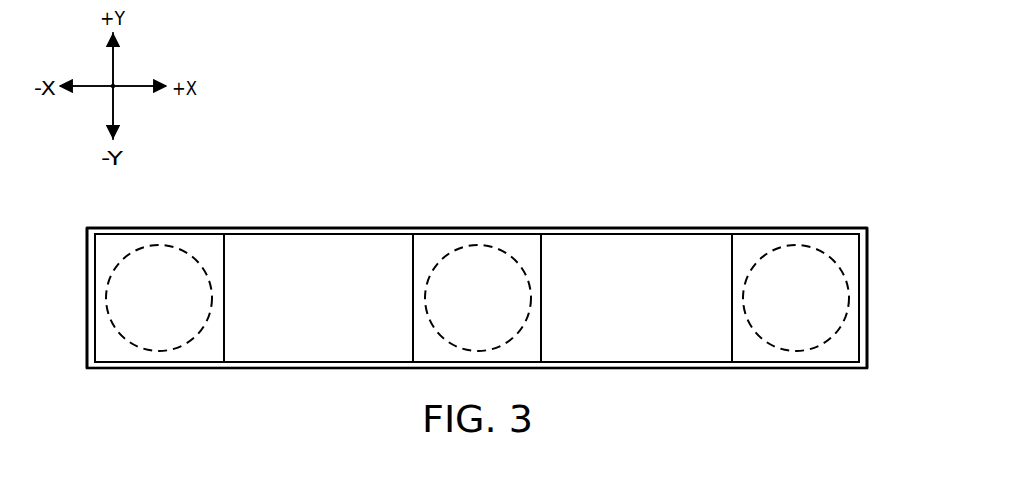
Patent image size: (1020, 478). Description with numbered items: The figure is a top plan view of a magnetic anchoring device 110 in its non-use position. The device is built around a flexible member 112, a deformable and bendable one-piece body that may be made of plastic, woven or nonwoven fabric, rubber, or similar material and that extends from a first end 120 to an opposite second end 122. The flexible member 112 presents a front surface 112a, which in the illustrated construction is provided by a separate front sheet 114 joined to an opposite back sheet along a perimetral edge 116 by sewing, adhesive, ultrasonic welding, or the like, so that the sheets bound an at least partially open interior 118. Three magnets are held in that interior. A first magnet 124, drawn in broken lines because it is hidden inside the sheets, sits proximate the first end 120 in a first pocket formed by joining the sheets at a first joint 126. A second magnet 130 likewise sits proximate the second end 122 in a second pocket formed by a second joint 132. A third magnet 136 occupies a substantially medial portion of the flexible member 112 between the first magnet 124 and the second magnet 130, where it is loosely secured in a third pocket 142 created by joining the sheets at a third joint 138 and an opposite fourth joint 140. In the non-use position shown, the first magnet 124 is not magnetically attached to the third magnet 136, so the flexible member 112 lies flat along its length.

The magnetic anchoring device 110 is at (686, 196).
The flexible member 112 is at (479, 222).
The front surface 112a is at (600, 235).
The front sheet 114 is at (109, 232).
The perimetral edge 116 is at (320, 237).
The open interior 118 is at (375, 238).
The first end 120 is at (87, 298).
The second end 122 is at (867, 298).
The first magnet 124 is at (159, 245).
The first joint 126 is at (224, 298).
The second magnet 130 is at (796, 238).
The second joint 132 is at (732, 353).
The third magnet 136 is at (510, 240).
The third joint 138 is at (413, 298).
The fourth joint 140 is at (541, 298).
The third pocket 142 is at (437, 238).